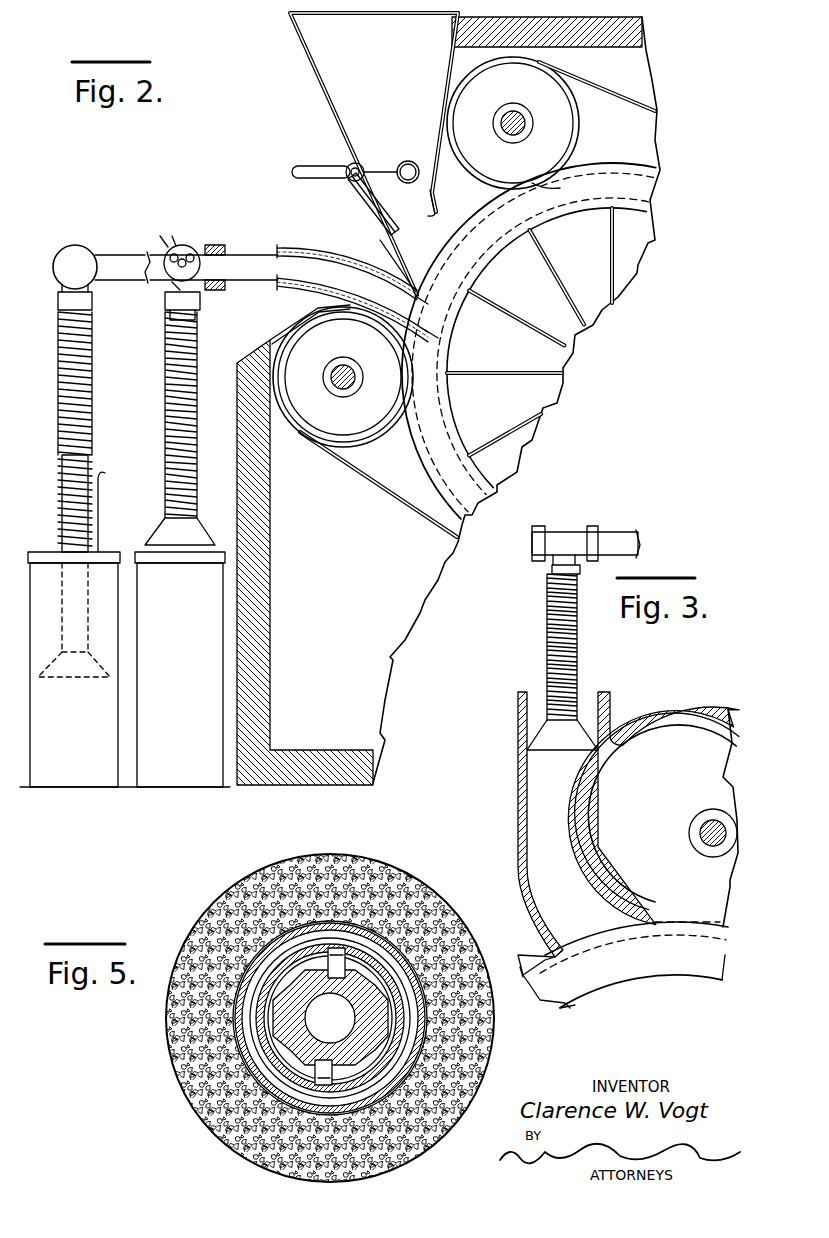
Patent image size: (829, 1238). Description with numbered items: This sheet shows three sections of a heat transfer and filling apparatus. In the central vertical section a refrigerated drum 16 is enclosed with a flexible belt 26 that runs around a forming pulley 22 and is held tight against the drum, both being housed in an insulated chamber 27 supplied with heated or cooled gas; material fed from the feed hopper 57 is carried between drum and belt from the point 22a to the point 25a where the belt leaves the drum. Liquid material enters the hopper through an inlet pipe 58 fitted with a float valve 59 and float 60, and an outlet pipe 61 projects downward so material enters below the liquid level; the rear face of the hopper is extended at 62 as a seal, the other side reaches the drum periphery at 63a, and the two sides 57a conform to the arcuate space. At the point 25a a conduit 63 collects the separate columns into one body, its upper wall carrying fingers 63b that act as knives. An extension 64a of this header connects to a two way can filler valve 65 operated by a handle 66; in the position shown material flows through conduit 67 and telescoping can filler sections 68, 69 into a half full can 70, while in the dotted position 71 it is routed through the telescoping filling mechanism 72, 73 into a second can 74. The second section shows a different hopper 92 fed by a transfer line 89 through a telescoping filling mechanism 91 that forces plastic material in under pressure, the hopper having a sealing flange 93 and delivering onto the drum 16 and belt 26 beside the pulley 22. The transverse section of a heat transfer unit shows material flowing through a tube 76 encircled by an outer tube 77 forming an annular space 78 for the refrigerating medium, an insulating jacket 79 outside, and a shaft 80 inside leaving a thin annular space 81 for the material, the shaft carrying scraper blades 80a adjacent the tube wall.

In FIG. 2, the drum 16 is at (638, 183).
In FIG. 3, the drum 16 is at (606, 948).
In FIG. 2, the forming pulley 22 is at (575, 150).
In FIG. 3, the forming pulley 22 is at (704, 750).
In FIG. 2, the point 22a is at (538, 185).
In FIG. 2, the point 25a is at (400, 372).
In FIG. 2, the belt 26 is at (615, 95).
In FIG. 3, the belt 26 is at (656, 925).
In FIG. 2, the insulated chamber 27 is at (680, 76).
In FIG. 2, the feed hopper 57 is at (305, 64).
In FIG. 2, the hopper sides 57a is at (404, 247).
In FIG. 2, the inlet pipe 58 is at (300, 166).
In FIG. 2, the float valve 59 is at (357, 160).
In FIG. 2, the float 60 is at (408, 160).
In FIG. 2, the outlet pipe 61 is at (368, 212).
In FIG. 2, the rear face extension 62 is at (427, 215).
In FIG. 2, the conduit 63 is at (290, 265).
In FIG. 2, the point 63a is at (417, 298).
In FIG. 2, the fingers 63b is at (433, 332).
In FIG. 2, the extension 64a is at (253, 250).
In FIG. 2, the two way can filler valve 65 is at (183, 245).
In FIG. 2, the handle 66 is at (168, 250).
In FIG. 2, the conduit 67 is at (106, 257).
In FIG. 2, the telescoping can filler section 68 is at (58, 400).
In FIG. 2, the telescoping can filler section 69 is at (66, 482).
In FIG. 2, the can 70 is at (74, 669).
In FIG. 2, the dotted line position 71 is at (207, 242).
In FIG. 2, the telescoping filling mechanism 72 is at (165, 318).
In FIG. 2, the telescoping filling mechanism 73 is at (172, 362).
In FIG. 2, the can 74 is at (180, 652).
In FIG. 5, the tube 76 is at (258, 1050).
In FIG. 5, the outer tube 77 is at (235, 1020).
In FIG. 5, the annular space 78 is at (262, 1068).
In FIG. 5, the insulating jacket 79 is at (215, 912).
In FIG. 5, the shaft 80 is at (376, 1018).
In FIG. 5, the scraper blades 80a is at (318, 945).
In FIG. 5, the annular space 81 is at (378, 970).
In FIG. 3, the transfer line 89 is at (610, 530).
In FIG. 3, the telescoping filling mechanism 91 is at (560, 627).
In FIG. 3, the hopper 92 is at (520, 798).
In FIG. 3, the sealing flange 93 is at (545, 958).